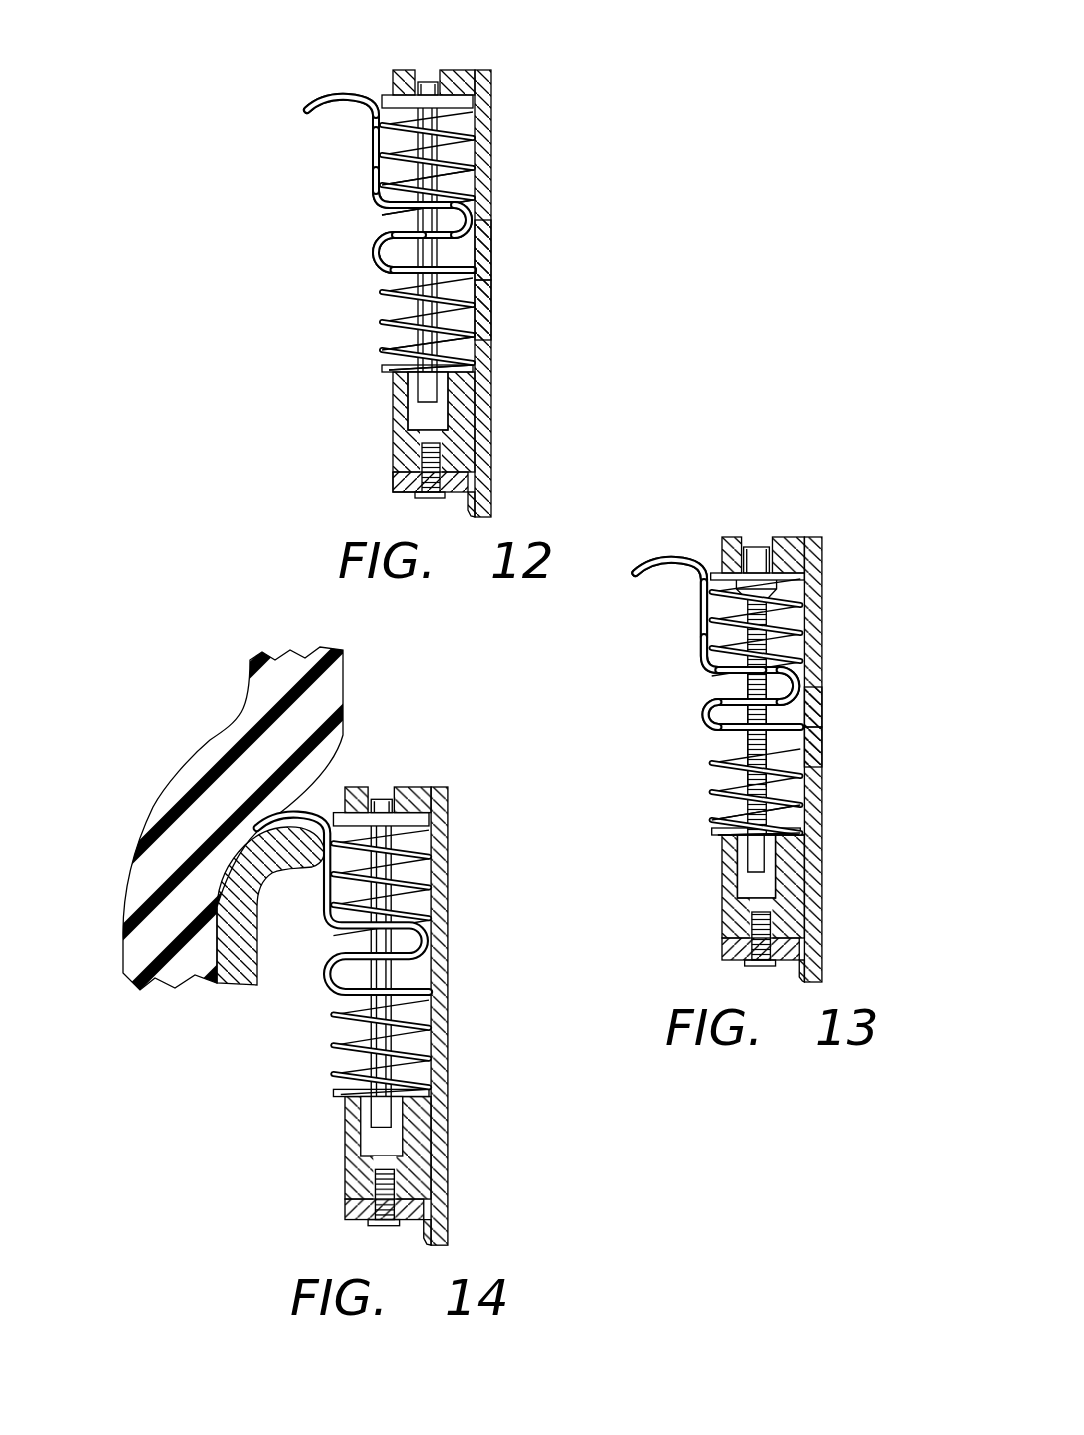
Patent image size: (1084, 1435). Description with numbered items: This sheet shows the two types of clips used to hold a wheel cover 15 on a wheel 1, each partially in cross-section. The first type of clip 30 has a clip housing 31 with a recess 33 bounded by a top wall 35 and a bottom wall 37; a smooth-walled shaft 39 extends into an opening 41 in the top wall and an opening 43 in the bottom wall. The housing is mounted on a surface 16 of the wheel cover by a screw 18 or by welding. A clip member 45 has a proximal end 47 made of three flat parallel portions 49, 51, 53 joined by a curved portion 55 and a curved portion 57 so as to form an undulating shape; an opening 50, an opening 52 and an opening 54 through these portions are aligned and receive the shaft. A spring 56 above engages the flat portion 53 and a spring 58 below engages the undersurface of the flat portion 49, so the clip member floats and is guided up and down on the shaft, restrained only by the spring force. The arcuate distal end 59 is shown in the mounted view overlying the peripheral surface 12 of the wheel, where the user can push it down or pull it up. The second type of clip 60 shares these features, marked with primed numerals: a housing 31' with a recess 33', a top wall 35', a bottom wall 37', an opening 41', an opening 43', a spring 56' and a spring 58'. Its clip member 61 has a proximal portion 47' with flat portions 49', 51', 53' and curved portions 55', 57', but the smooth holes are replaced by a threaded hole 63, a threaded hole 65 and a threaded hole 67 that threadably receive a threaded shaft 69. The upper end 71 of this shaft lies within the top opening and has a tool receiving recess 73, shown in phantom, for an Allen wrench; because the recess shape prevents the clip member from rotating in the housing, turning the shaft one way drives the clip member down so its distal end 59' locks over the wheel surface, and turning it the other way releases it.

In FIG. 14, the wheel 1 is at (232, 988).
In FIG. 14, the peripheral surface 12 is at (375, 790).
In FIG. 12, the wheel cover 15 is at (482, 498).
In FIG. 12, the surface 16 is at (480, 478).
In FIG. 12, the screw 18 is at (385, 482).
In FIG. 12, the clip 30 is at (531, 262).
In FIG. 14, the clip 30 is at (467, 1160).
In FIG. 12, the clip housing 31 is at (497, 432).
In FIG. 14, the clip housing 31 is at (439, 1161).
In FIG. 12, the recess 33 is at (539, 250).
In FIG. 12, the top wall 35 is at (485, 53).
In FIG. 12, the bottom wall 37 is at (498, 364).
In FIG. 12, the smooth-walled shaft 39 is at (480, 265).
In FIG. 12, the opening 41 is at (442, 201).
In FIG. 12, the opening 43 is at (344, 401).
In FIG. 12, the clip member 45 is at (317, 228).
In FIG. 12, the proximal end 47 is at (324, 263).
In FIG. 12, the flat portion 49 is at (348, 324).
In FIG. 12, the opening 50 is at (480, 300).
In FIG. 12, the flat portion 51 is at (353, 181).
In FIG. 12, the opening 52 is at (377, 207).
In FIG. 12, the flat portion 53 is at (484, 176).
In FIG. 12, the opening 54 is at (467, 140).
In FIG. 12, the curved portion 55 is at (292, 283).
In FIG. 12, the spring 56 is at (390, 57).
In FIG. 12, the curved portion 57 is at (533, 205).
In FIG. 12, the spring 58 is at (348, 368).
In FIG. 12, the arcuate distal end 59 is at (290, 71).
In FIG. 14, the arcuate distal end 59 is at (343, 839).
In FIG. 13, the clip 60 is at (793, 767).
In FIG. 13, the clip member 61 is at (673, 696).
In FIG. 13, the threaded hole 63 is at (800, 735).
In FIG. 13, the threaded hole 65 is at (767, 687).
In FIG. 13, the threaded hole 67 is at (708, 592).
In FIG. 13, the threaded shaft 69 is at (808, 775).
In FIG. 13, the upper end 71 is at (763, 557).
In FIG. 13, the tool receiving recess 73 is at (760, 553).
In FIG. 13, the housing 31' is at (819, 908).
In FIG. 13, the recess 33' is at (861, 707).
In FIG. 13, the top wall 35' is at (814, 526).
In FIG. 13, the bottom wall 37' is at (819, 865).
In FIG. 13, the opening 41' is at (751, 633).
In FIG. 13, the opening 43' is at (694, 871).
In FIG. 13, the proximal portion 47' is at (667, 661).
In FIG. 13, the flat portion 49' is at (701, 792).
In FIG. 13, the flat portion 51' is at (686, 634).
In FIG. 13, the flat portion 53' is at (814, 619).
In FIG. 13, the curved portion 55' is at (651, 727).
In FIG. 13, the spring 56' is at (812, 550).
In FIG. 13, the curved portion 57' is at (852, 674).
In FIG. 13, the spring 58' is at (814, 846).
In FIG. 13, the distal end 59' is at (640, 543).